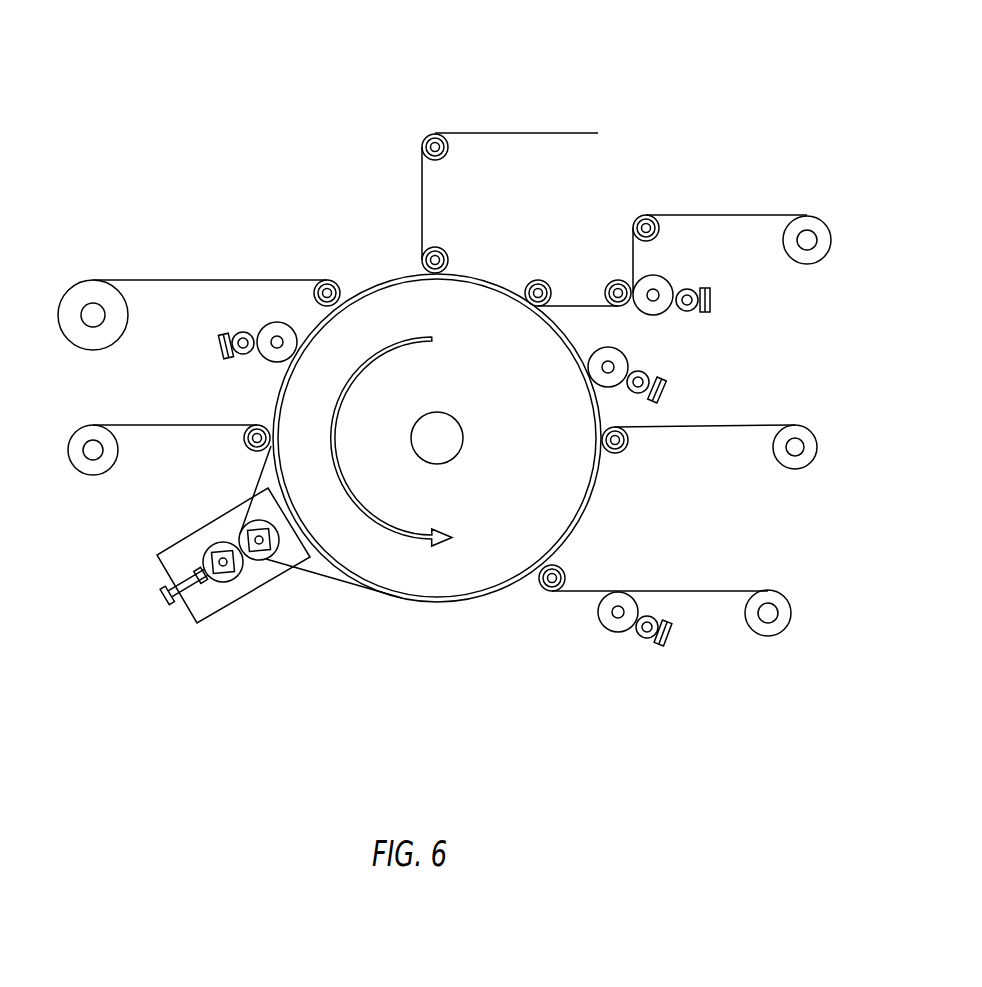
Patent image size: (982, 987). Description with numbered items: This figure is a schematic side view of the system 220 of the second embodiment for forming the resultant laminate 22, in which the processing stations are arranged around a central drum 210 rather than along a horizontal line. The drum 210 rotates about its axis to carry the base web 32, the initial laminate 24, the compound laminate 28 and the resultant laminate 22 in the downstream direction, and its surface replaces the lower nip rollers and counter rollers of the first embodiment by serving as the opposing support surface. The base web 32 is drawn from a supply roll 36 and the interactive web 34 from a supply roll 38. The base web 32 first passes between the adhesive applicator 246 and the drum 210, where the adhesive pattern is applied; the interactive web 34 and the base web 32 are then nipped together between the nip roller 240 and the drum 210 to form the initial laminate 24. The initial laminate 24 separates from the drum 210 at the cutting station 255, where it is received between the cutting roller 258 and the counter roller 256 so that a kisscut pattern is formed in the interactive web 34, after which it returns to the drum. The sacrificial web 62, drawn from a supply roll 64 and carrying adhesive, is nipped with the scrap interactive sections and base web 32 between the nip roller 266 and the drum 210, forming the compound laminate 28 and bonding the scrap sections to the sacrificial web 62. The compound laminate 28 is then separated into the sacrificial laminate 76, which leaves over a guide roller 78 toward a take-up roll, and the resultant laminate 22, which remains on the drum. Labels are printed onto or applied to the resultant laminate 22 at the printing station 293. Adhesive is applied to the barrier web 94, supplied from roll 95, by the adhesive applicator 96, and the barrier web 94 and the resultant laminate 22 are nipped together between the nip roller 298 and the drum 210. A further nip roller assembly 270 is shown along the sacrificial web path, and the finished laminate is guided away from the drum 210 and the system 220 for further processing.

The system 220 is at (248, 185).
The central drum 210 is at (527, 428).
The compound laminate 28 is at (586, 522).
The resultant laminate 22 is at (570, 341).
The initial laminate 24 is at (307, 577).
The base web 32 is at (177, 280).
The interactive web 34 is at (180, 423).
The supply roll 38 is at (62, 323).
The supply roll 36 is at (80, 472).
The adhesive applicator 246 is at (267, 313).
The nip roller 240 is at (243, 438).
The counter roller 256 is at (270, 567).
The cutting roller 258 is at (210, 547).
The cutting station 255 is at (163, 603).
The nip roller 298 is at (557, 275).
The barrier web 94 is at (757, 215).
The web supply roll 95 is at (828, 257).
The adhesive applicator 96 is at (678, 263).
The printing station 293 is at (643, 363).
The sacrificial laminate 76 is at (727, 425).
The idler roller 78 is at (628, 440).
The nip roller 266 is at (580, 573).
The sacrificial web 62 is at (737, 590).
The supply roll 64 is at (795, 612).
The nip roller assembly 270 is at (623, 633).